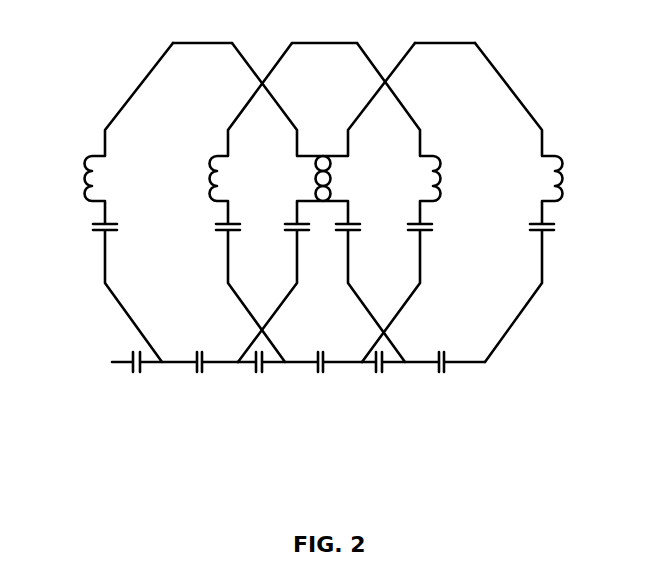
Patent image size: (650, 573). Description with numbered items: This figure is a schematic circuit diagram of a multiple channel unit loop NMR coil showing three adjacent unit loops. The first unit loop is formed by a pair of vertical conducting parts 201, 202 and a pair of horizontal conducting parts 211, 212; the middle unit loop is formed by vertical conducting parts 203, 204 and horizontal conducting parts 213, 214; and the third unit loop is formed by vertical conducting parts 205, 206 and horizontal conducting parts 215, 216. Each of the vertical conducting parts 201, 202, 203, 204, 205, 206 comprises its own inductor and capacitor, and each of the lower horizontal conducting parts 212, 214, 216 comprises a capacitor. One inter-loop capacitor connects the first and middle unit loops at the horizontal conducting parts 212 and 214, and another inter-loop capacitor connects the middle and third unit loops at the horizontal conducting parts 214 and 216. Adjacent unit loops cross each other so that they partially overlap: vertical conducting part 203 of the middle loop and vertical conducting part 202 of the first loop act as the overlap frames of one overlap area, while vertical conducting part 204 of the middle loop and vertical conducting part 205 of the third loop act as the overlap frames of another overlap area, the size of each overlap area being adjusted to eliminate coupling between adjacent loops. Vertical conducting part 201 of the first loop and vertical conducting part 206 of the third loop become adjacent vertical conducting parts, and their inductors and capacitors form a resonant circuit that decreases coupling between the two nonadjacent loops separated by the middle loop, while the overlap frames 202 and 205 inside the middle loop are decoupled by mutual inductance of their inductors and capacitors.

The vertical conducting part 201 is at (119, 110).
The vertical conducting part 202 is at (273, 317).
The vertical conducting part 203 is at (228, 129).
The vertical conducting part 204 is at (393, 318).
The vertical conducting part 205 is at (348, 128).
The vertical conducting part 206 is at (514, 330).
The horizontal conducting part 211 is at (193, 45).
The horizontal conducting part 212 is at (165, 364).
The horizontal conducting part 213 is at (322, 45).
The horizontal conducting part 214 is at (292, 364).
The horizontal conducting part 215 is at (437, 45).
The horizontal conducting part 216 is at (479, 364).